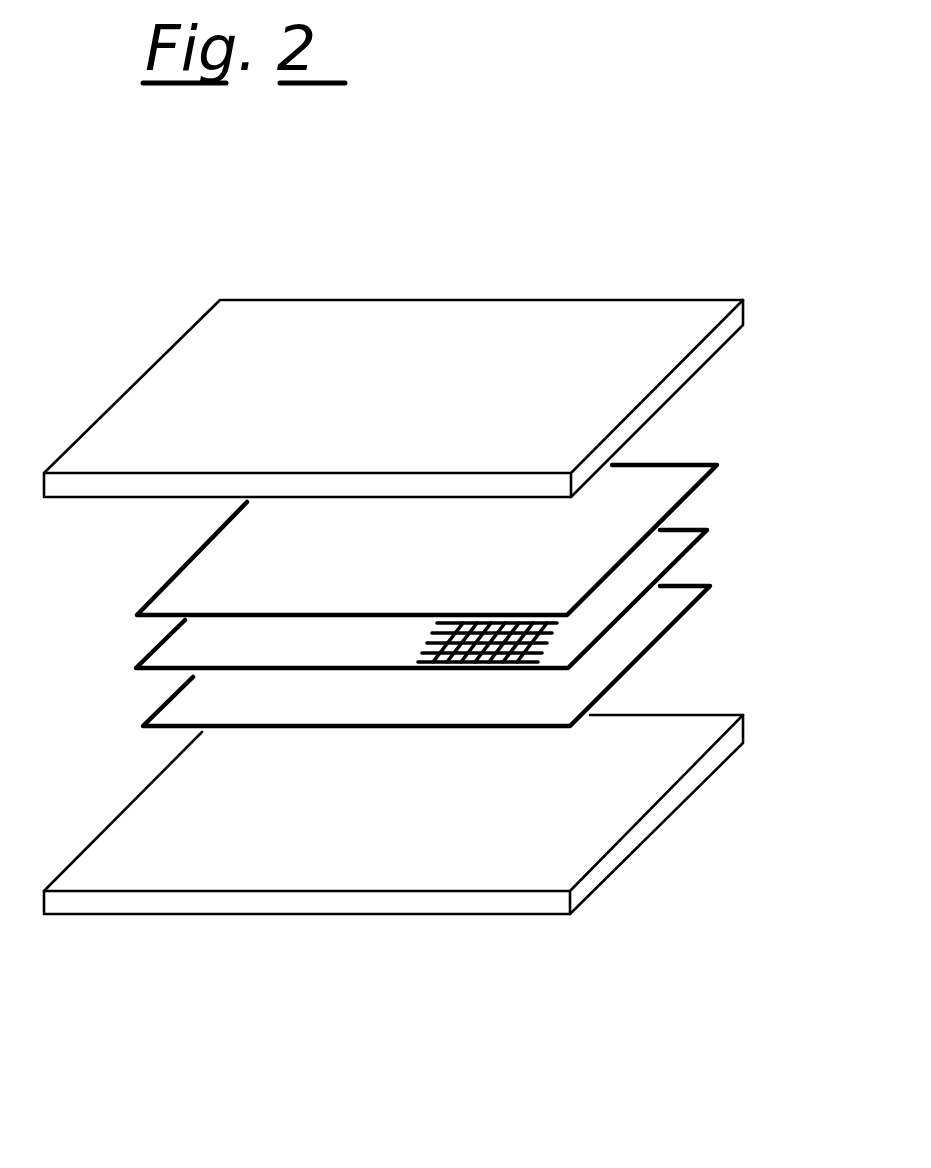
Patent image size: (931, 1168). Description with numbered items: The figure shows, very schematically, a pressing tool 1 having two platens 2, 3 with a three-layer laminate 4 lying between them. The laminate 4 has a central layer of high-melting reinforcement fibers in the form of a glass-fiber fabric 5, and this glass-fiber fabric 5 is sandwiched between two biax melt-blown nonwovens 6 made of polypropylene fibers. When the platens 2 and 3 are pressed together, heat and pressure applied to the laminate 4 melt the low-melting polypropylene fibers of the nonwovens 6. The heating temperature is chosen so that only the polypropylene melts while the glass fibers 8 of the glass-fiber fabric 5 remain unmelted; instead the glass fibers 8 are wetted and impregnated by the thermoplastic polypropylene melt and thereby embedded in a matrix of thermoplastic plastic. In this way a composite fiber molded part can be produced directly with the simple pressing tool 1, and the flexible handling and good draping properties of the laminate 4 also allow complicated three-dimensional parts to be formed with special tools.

The pressing tool 1 is at (627, 276).
The platen 2 is at (472, 910).
The platen 3 is at (532, 313).
The three-layer laminate 4 is at (778, 585).
The glass-fiber fabric 5 is at (589, 645).
The biax melt-blown nonwoven 6 is at (658, 478).
The glass fibers 8 is at (562, 634).